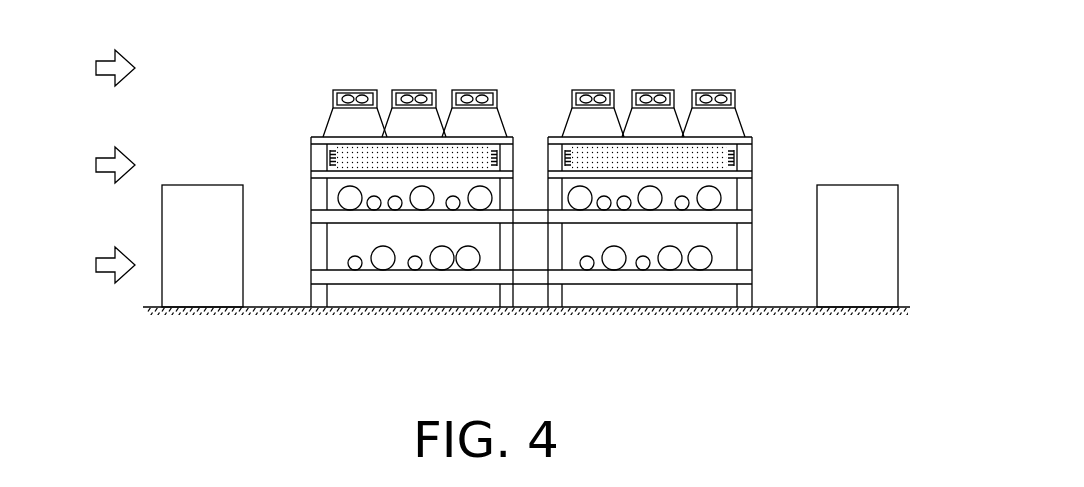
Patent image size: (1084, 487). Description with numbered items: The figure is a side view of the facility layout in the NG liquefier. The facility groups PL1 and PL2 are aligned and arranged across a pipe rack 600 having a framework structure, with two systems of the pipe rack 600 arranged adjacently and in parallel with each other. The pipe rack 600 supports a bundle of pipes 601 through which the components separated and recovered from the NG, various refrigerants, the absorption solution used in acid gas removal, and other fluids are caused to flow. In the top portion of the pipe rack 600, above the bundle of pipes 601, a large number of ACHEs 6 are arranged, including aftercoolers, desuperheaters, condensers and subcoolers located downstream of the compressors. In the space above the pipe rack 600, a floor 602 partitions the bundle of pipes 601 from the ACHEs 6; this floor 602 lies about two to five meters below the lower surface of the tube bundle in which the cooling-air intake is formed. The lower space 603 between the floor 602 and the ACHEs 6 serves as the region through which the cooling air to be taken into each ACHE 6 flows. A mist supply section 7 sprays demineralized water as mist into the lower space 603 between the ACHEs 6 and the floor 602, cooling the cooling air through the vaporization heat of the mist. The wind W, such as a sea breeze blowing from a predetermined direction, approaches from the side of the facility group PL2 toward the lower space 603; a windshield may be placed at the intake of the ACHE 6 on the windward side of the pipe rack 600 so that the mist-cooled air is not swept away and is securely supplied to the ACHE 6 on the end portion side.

The ACHE 6 is at (568, 79).
The mist supply section 7 is at (328, 157).
The pipe rack 600 is at (308, 257).
The bundle of pipes 601 is at (353, 262).
The floor 602 is at (362, 168).
The lower space 603 is at (428, 152).
The wind W is at (104, 156).
The facility group PL1 is at (863, 172).
The facility group PL2 is at (207, 173).